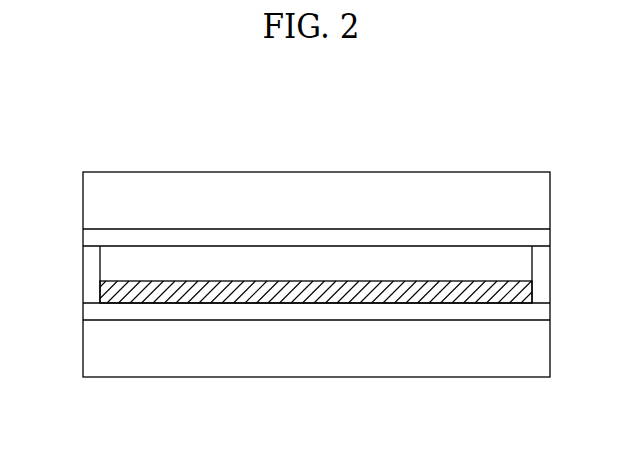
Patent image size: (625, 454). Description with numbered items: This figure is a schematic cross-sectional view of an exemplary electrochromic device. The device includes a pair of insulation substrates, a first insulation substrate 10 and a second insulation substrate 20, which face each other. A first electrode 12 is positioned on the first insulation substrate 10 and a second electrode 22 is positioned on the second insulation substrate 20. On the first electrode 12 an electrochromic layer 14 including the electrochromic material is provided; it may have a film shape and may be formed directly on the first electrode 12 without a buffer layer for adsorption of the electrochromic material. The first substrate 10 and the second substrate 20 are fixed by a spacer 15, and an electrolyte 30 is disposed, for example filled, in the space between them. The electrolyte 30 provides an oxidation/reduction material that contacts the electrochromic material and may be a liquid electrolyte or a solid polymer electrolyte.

The first insulation substrate 10 is at (418, 353).
The first electrode 12 is at (340, 312).
The electrochromic layer 14 is at (259, 293).
The spacer 15 is at (92, 286).
The second insulation substrate 20 is at (399, 193).
The second electrode 22 is at (306, 240).
The electrolyte 30 is at (201, 262).